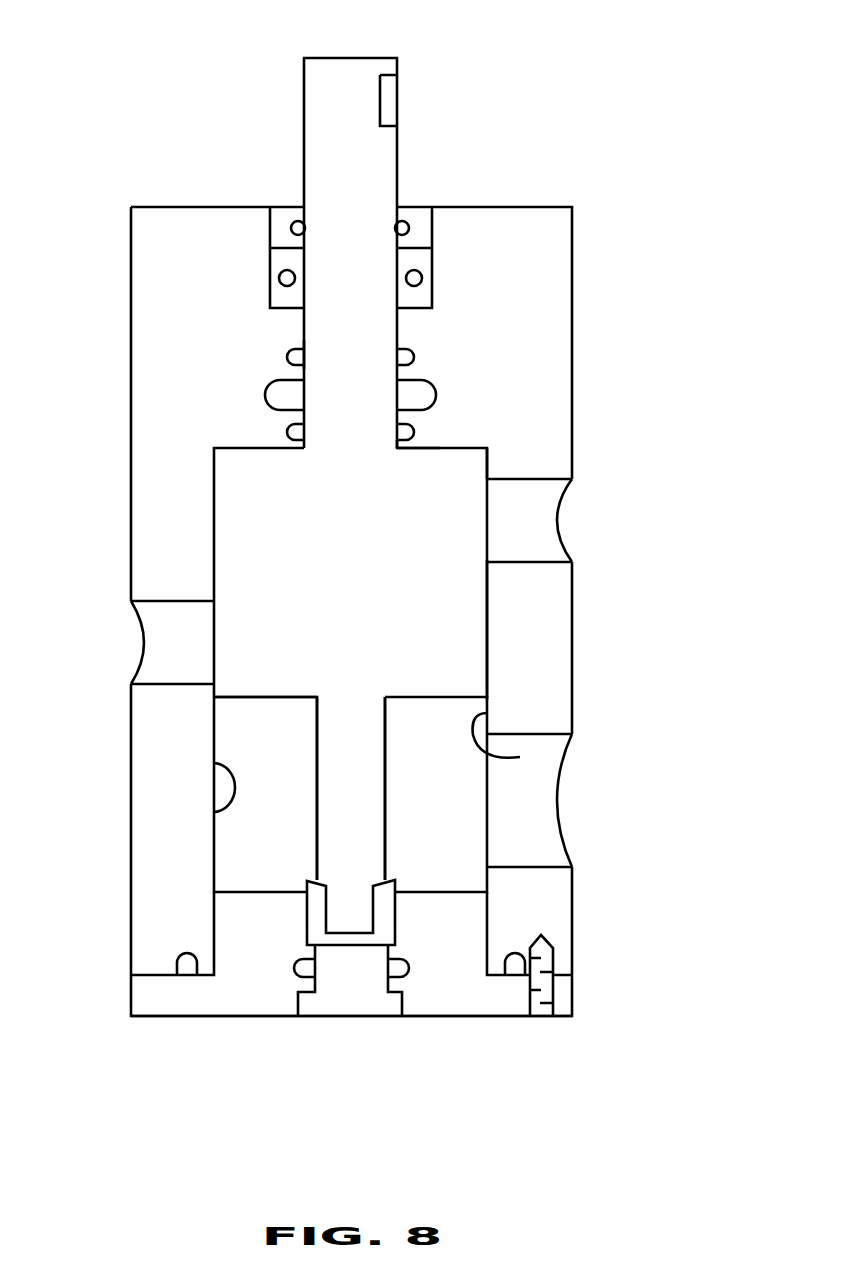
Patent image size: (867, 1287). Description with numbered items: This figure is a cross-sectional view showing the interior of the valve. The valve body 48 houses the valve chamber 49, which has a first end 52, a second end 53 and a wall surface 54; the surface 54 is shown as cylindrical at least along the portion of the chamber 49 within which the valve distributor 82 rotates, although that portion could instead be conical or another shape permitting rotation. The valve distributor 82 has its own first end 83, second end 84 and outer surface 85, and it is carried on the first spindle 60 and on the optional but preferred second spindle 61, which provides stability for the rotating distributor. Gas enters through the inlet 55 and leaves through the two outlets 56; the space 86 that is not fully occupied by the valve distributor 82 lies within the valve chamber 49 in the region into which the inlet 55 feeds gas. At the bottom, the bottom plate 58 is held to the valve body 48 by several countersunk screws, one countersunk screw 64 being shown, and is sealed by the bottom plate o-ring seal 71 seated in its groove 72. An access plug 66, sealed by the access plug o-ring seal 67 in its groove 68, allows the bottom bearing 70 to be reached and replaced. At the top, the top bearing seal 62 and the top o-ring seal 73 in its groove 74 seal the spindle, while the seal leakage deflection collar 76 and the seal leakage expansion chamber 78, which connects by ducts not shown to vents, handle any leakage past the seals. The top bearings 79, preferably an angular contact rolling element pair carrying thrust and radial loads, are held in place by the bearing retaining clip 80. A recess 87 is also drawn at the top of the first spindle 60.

The valve body 48 is at (495, 345).
The valve chamber 49 is at (253, 800).
The first end 52 is at (475, 447).
The second end 53 is at (245, 890).
The wall surface 54 is at (213, 763).
The inlet 55 is at (502, 812).
The outlets 56 is at (163, 651).
The bottom plate 58 is at (192, 1018).
The first spindle 60 is at (334, 180).
The second spindle 61 is at (331, 802).
The top bearing seal 62 is at (275, 233).
The countersunk screw 64 is at (543, 1017).
The access plug 66 is at (346, 984).
The access plug o-ring seal 67 is at (295, 963).
The groove 68 is at (313, 970).
The bottom bearing 70 is at (312, 907).
The bottom plate o-ring seal 71 is at (513, 973).
The groove 72 is at (515, 953).
The top o-ring seal 73 is at (307, 358).
The groove 74 is at (285, 355).
The seal leakage deflection collar 76 is at (287, 430).
The seal leakage expansion chamber 78 is at (268, 388).
The top bearings 79 is at (270, 268).
The bearing retaining clip 80 is at (297, 227).
The valve distributor 82 is at (334, 580).
The first end 83 is at (427, 452).
The second end 84 is at (252, 697).
The outer surface 85 is at (487, 630).
The space 86 is at (412, 802).
The recess 87 is at (392, 93).